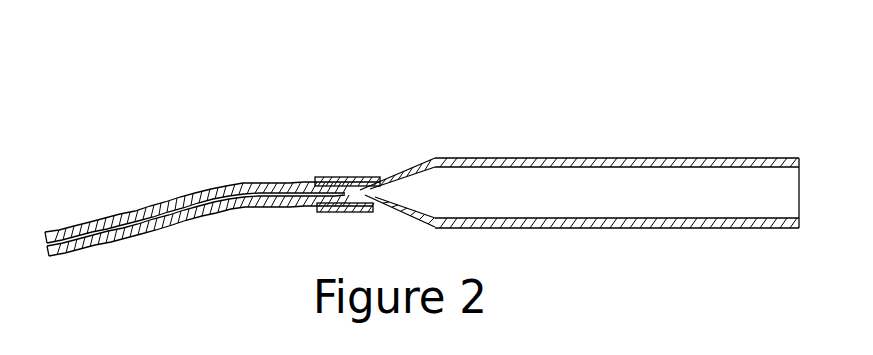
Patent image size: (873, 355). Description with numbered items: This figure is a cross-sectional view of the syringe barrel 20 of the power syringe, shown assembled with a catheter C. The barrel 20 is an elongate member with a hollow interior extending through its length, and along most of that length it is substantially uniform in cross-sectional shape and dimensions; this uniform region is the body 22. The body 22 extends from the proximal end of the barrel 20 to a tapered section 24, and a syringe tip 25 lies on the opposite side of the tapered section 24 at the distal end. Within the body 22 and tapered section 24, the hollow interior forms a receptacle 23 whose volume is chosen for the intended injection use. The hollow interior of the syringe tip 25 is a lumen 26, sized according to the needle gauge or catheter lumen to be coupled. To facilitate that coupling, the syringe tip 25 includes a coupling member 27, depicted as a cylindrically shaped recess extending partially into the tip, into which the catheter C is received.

The barrel 20 is at (544, 142).
The body 22 is at (572, 163).
The receptacle 23 is at (490, 203).
The tapered section 24 is at (410, 168).
The syringe tip 25 is at (360, 212).
The lumen 26 is at (355, 187).
The coupling member 27 is at (325, 210).
The catheter C is at (115, 222).